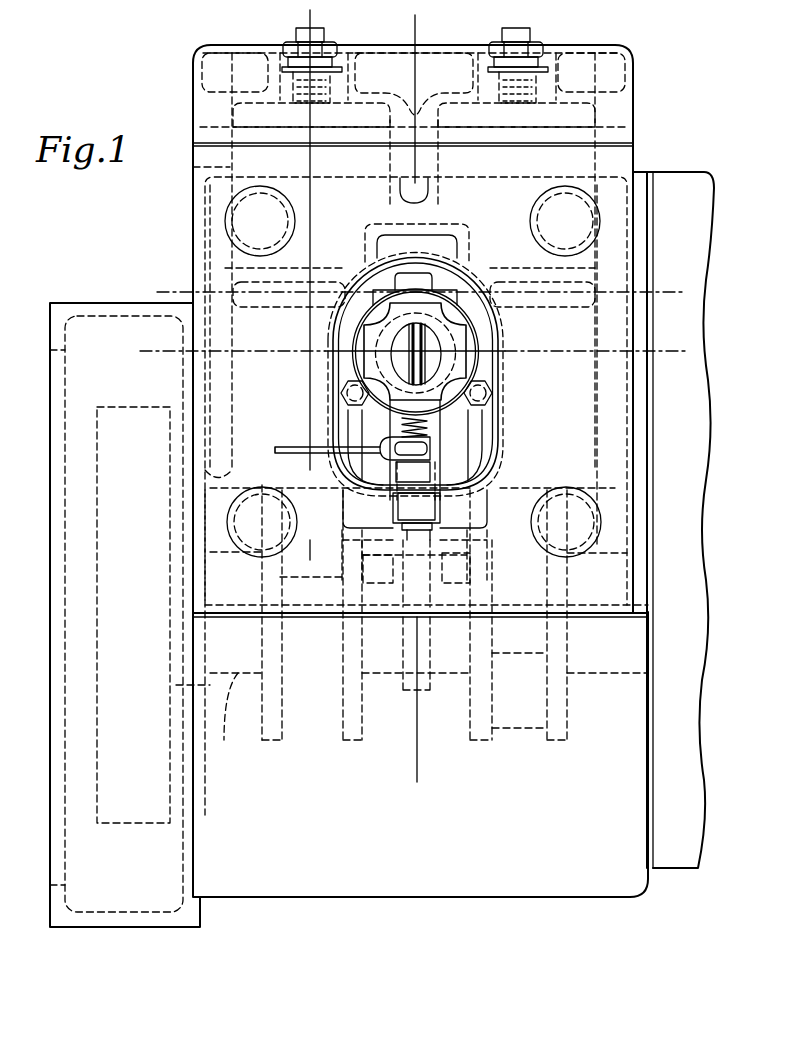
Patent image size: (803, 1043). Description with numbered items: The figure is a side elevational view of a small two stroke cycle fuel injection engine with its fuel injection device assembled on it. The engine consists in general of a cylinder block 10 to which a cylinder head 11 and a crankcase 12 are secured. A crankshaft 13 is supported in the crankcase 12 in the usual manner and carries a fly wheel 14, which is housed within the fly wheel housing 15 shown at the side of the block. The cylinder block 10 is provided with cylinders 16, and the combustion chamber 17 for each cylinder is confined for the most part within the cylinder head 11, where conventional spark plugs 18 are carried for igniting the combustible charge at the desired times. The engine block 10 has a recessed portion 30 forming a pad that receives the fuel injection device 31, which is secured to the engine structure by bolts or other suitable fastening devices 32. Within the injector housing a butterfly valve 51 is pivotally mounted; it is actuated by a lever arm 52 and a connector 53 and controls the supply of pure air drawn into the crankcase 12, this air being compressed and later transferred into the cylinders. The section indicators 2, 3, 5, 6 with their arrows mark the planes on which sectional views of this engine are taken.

The section line 2- 2 is at (319, 17).
The section line 3- 3 is at (409, 30).
The section line 5- 5 is at (150, 359).
The section line 6- 6 is at (169, 299).
The cylinder block 10 is at (193, 214).
The cylinder head 11 is at (193, 67).
The crankcase 12 is at (545, 888).
The crankshaft 13 is at (236, 724).
The fly wheel 14 is at (113, 420).
The fly wheel housing 15 is at (62, 304).
The cylinders 16 is at (193, 168).
The combustion chamber 17 is at (258, 121).
The spark plugs 18 is at (326, 38).
The recessed portion 30 is at (472, 282).
The fuel injection device 31 is at (496, 364).
The fastening devices 32 is at (341, 396).
The butterfly valve 51 is at (413, 357).
The lever arm 52 is at (430, 450).
The connector 53 is at (330, 447).